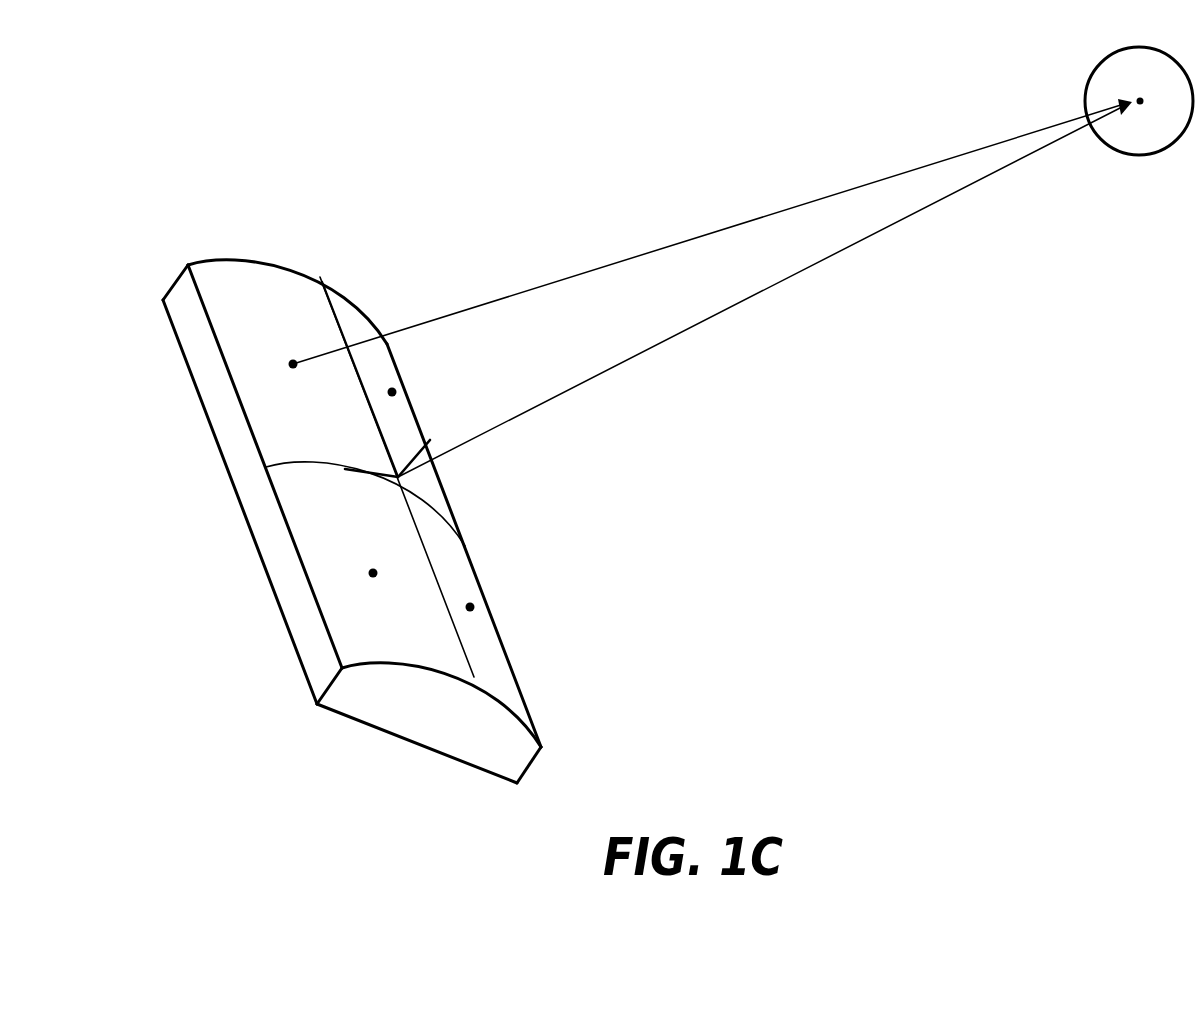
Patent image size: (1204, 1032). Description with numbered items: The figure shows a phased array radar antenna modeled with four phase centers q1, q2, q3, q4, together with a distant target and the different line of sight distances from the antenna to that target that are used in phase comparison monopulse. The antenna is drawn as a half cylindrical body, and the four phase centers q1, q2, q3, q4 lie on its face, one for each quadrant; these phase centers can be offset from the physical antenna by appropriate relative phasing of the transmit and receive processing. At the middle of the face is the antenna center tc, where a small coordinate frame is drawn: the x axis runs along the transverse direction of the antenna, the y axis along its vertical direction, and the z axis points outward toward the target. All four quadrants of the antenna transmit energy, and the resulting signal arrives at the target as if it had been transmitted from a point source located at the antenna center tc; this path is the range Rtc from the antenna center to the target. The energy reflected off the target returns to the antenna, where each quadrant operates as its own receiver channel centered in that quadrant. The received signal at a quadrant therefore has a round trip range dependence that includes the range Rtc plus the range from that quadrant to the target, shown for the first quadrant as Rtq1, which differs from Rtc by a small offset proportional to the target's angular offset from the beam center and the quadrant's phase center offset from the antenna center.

The radar antenna is at (600, 521).
The element target is at (1139, 101).
The first phase center q1 is at (274, 359).
The second phase center q2 is at (382, 377).
The third phase center q3 is at (365, 590).
The fourth phase center q4 is at (474, 623).
The antenna center tc is at (385, 399).
The range from first quadrant to target Rtq1 is at (708, 234).
The range from antenna center to target Rtc is at (765, 288).